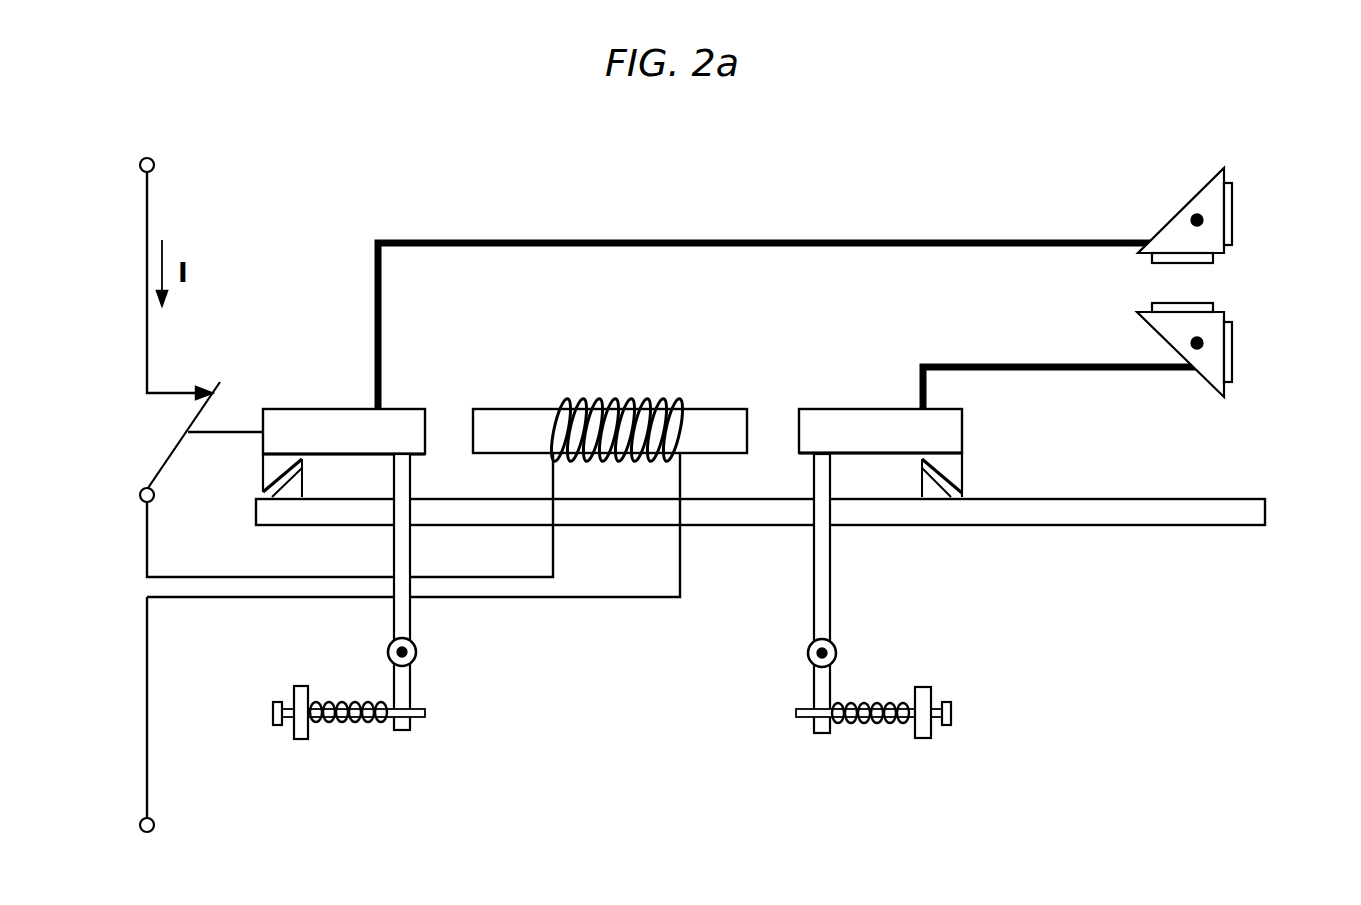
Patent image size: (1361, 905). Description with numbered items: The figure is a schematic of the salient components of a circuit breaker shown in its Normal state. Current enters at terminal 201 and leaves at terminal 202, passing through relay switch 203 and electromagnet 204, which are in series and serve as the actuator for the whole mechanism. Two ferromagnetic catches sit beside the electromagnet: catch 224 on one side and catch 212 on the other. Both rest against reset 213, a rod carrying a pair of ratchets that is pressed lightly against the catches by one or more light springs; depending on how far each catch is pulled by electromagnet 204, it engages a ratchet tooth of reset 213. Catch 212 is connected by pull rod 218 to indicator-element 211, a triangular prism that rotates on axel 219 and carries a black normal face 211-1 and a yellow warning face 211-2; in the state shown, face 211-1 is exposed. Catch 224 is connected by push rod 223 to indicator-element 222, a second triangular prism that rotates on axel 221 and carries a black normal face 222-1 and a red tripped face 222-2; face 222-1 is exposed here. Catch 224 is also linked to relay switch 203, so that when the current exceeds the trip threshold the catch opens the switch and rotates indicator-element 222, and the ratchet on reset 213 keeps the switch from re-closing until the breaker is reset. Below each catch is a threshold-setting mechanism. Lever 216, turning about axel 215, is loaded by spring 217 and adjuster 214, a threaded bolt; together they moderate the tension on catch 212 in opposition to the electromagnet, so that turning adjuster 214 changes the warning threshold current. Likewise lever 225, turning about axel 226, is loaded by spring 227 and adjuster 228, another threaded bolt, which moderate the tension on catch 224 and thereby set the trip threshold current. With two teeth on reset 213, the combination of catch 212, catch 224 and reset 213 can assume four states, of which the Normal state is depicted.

The terminal 201 is at (156, 164).
The terminal 202 is at (140, 825).
The relay switch 203 is at (176, 448).
The electromagnet 204 is at (612, 398).
The indicator-element 211 is at (1208, 383).
The normal face 211-1 is at (1235, 366).
The warning face 211-2 is at (1215, 306).
The catch 212 is at (843, 408).
The reset 213 is at (1268, 512).
The adjuster 214 is at (953, 713).
The axel 215 is at (805, 656).
The lever 216 is at (832, 600).
The spring 217 is at (871, 724).
The pull rod 218 is at (978, 364).
The axel 219 is at (1190, 343).
The axel 221 is at (1190, 220).
The indicator-element 222 is at (1205, 183).
The normal face 222-1 is at (1235, 207).
The tripped face 222-2 is at (1215, 259).
The push rod 223 is at (924, 239).
The catch 224 is at (307, 409).
The lever 225 is at (412, 627).
The axel 226 is at (386, 652).
The spring 227 is at (346, 724).
The adjuster 228 is at (272, 712).